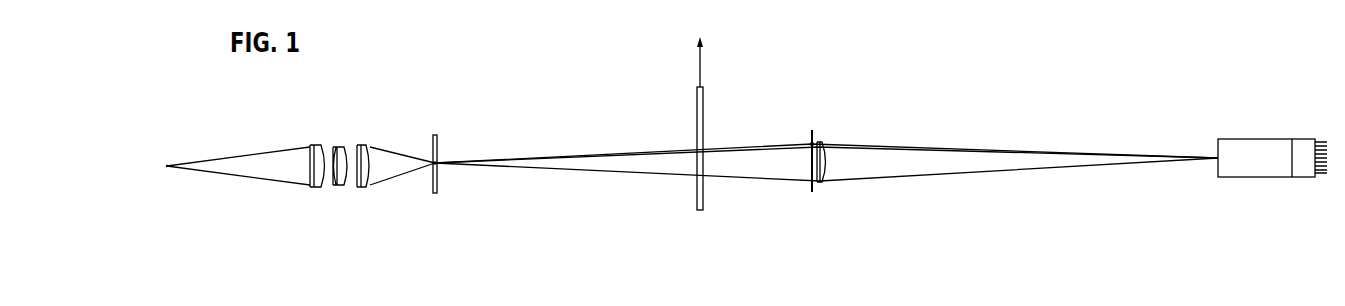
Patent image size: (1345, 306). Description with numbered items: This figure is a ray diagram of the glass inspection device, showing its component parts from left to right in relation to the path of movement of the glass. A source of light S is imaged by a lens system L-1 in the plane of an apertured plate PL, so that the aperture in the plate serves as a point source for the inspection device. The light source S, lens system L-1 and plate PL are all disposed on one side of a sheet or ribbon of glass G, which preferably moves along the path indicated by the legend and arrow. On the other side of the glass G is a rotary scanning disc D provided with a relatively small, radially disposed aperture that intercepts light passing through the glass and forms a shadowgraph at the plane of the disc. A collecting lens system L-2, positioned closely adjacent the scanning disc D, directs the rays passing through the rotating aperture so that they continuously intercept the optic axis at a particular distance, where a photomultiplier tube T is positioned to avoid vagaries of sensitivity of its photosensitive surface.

The source of light S is at (167, 166).
The lens system L-1 is at (372, 144).
The apertured plate PL is at (436, 193).
The glass G is at (893, 57).
The rotary scanning disc D is at (811, 190).
The collecting lens system L-2 is at (825, 177).
The photomultiplier tube T is at (1262, 139).